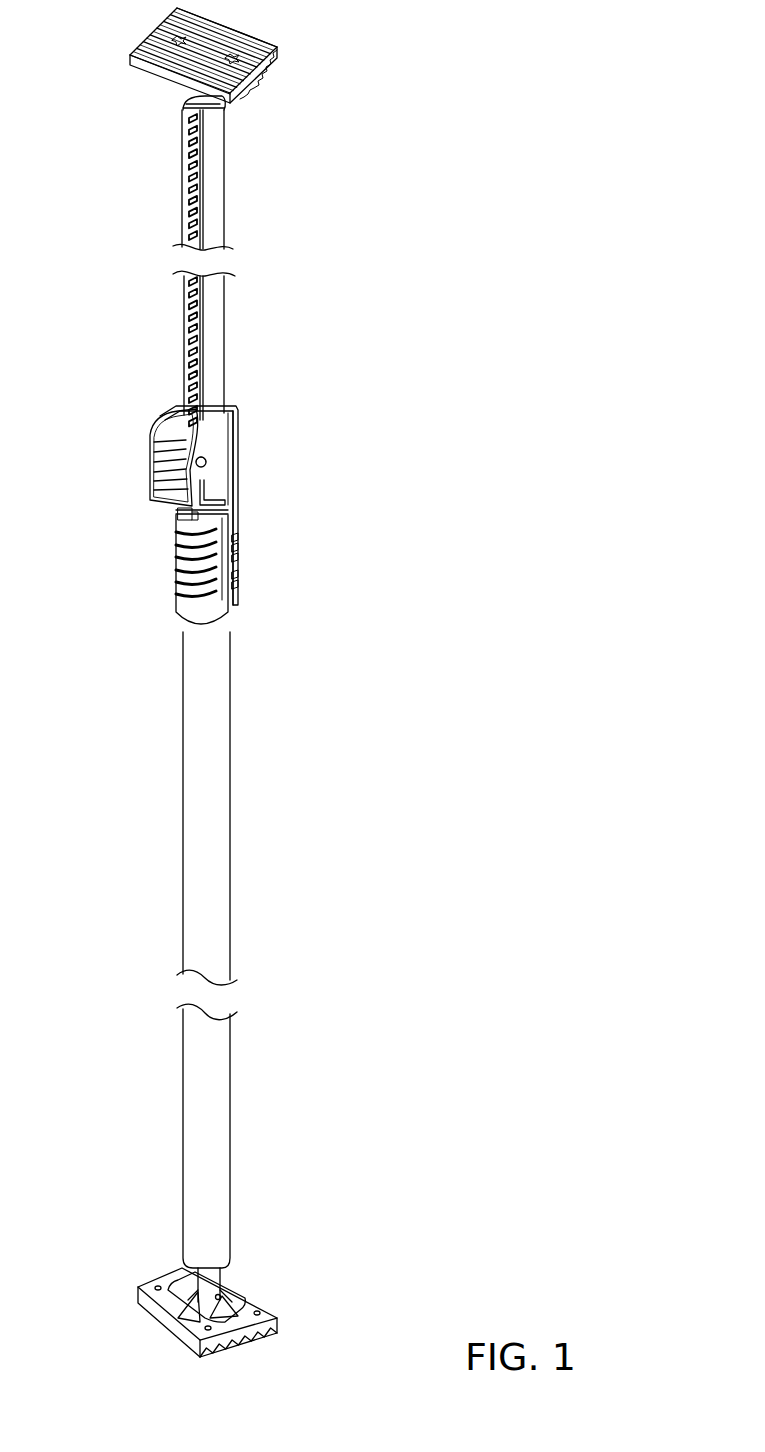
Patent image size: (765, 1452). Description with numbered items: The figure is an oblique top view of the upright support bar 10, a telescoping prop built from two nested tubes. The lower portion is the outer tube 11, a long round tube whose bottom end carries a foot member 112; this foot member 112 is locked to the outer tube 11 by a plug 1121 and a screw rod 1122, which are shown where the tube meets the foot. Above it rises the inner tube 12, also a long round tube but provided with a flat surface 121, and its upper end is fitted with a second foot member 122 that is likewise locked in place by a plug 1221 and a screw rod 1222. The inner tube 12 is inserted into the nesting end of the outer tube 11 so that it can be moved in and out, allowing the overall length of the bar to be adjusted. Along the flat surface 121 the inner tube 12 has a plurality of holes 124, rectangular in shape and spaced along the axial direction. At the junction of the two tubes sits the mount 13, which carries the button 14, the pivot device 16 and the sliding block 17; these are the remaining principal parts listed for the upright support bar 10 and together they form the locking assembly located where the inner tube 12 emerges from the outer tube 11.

The upright support bar 10 is at (442, 468).
The outer tube 11 is at (230, 840).
The foot member 112 is at (275, 1335).
The plug 1121 is at (232, 1266).
The screw rod 1122 is at (215, 1290).
The inner tube 12 is at (196, 292).
The flat surface 121 is at (198, 161).
The foot member 122 is at (245, 42).
The plug 1221 is at (180, 108).
The screw rod 1222 is at (188, 100).
The holes 124 is at (193, 303).
The mount 13 is at (250, 506).
The button 14 is at (148, 465).
The pivot device 16 is at (206, 462).
The sliding block 17 is at (175, 515).